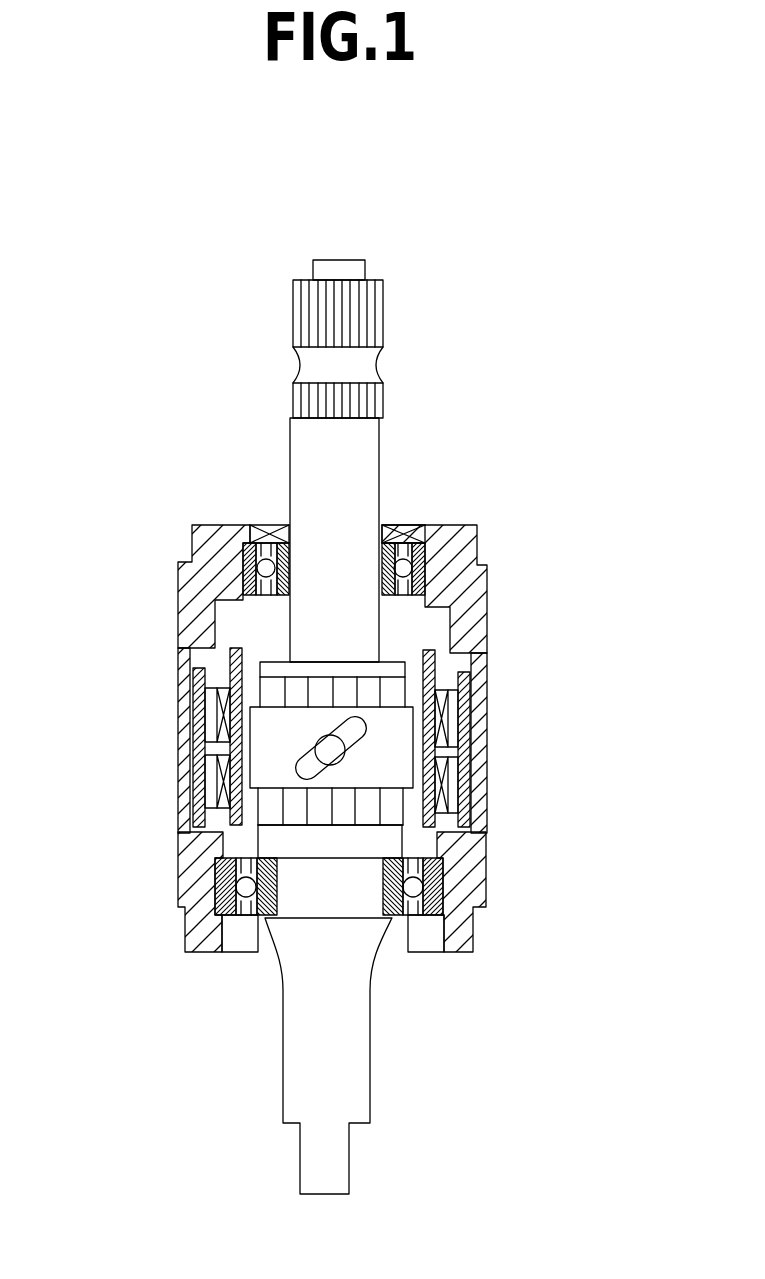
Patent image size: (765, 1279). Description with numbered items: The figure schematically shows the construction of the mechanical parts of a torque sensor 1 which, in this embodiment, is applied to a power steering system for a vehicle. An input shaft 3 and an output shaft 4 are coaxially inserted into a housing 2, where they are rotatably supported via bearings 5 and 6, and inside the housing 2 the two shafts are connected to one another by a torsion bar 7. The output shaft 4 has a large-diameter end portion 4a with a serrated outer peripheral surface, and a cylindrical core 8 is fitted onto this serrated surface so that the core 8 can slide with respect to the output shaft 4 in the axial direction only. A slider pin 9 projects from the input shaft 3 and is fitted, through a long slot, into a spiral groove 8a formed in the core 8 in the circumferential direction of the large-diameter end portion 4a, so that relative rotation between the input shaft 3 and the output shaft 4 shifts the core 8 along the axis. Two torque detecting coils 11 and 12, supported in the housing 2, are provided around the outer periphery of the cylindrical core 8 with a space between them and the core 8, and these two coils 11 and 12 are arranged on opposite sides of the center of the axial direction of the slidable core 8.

The torque sensor 1 is at (192, 300).
The housing 2 is at (182, 582).
The input shaft 3 is at (363, 443).
The output shaft 4 is at (363, 1083).
The large-diameter end portion 4a is at (368, 692).
The bearing 5 is at (265, 540).
The bearing 6 is at (248, 905).
The torsion bar 7 is at (348, 268).
The cylindrical core 8 is at (272, 733).
The spiral groove 8a is at (307, 773).
The slider pin 9 is at (332, 755).
The torque detecting coil 11 is at (453, 723).
The torque detecting coil 12 is at (453, 785).